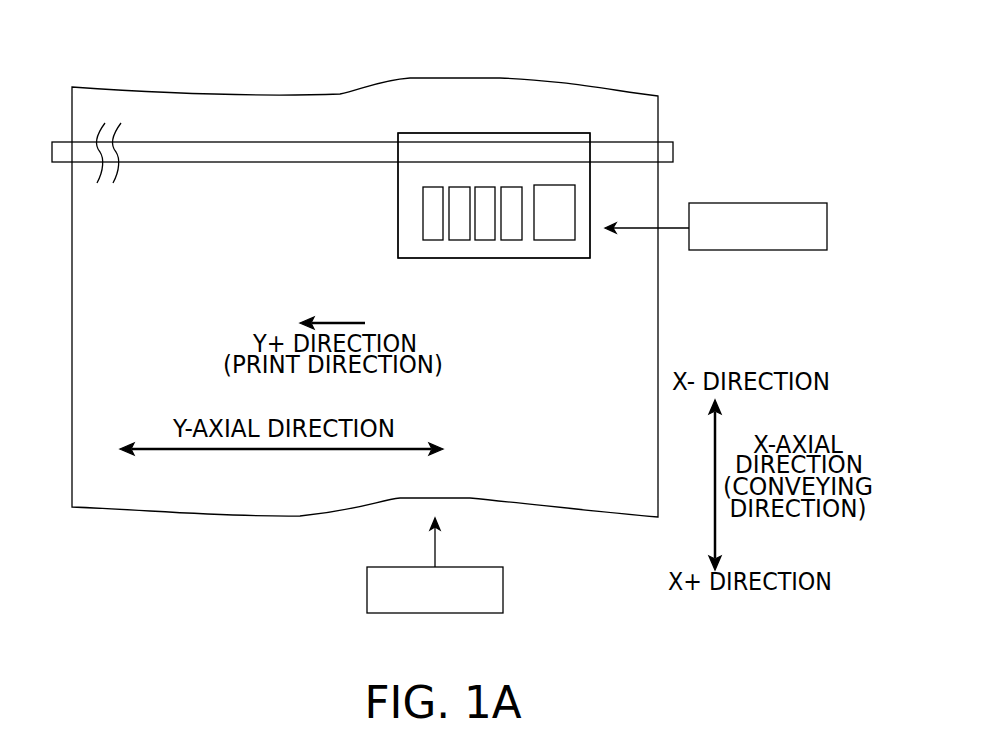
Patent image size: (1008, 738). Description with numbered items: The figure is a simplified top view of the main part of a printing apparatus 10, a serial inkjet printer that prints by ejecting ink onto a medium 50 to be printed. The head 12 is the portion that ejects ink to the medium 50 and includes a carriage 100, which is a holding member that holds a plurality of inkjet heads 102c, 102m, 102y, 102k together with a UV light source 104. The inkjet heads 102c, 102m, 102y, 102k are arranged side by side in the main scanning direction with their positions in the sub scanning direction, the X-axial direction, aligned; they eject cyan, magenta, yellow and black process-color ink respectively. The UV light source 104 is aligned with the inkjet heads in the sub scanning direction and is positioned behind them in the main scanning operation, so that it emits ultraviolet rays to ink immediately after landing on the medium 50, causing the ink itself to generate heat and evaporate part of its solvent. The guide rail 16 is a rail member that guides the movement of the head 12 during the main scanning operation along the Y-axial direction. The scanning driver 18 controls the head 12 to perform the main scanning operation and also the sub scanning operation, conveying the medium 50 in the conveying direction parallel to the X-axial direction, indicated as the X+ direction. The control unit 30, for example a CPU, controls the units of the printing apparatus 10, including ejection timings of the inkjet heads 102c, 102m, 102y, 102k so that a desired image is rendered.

The printing apparatus 10 is at (699, 72).
The head 12 is at (398, 222).
The guide rail 16 is at (187, 162).
The scanning driver 18 is at (748, 203).
The control unit 30 is at (503, 595).
The medium 50 is at (225, 500).
The carriage 100 is at (560, 258).
The inkjet head 102c is at (433, 232).
The inkjet head 102m is at (462, 185).
The inkjet head 102y is at (485, 232).
The inkjet head 102k is at (515, 185).
The UV light source 104 is at (562, 180).